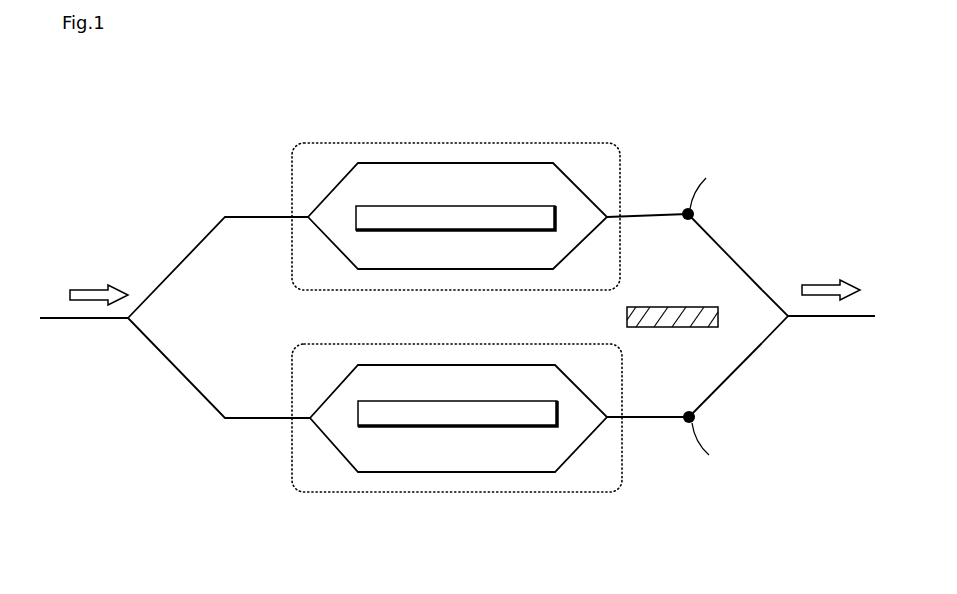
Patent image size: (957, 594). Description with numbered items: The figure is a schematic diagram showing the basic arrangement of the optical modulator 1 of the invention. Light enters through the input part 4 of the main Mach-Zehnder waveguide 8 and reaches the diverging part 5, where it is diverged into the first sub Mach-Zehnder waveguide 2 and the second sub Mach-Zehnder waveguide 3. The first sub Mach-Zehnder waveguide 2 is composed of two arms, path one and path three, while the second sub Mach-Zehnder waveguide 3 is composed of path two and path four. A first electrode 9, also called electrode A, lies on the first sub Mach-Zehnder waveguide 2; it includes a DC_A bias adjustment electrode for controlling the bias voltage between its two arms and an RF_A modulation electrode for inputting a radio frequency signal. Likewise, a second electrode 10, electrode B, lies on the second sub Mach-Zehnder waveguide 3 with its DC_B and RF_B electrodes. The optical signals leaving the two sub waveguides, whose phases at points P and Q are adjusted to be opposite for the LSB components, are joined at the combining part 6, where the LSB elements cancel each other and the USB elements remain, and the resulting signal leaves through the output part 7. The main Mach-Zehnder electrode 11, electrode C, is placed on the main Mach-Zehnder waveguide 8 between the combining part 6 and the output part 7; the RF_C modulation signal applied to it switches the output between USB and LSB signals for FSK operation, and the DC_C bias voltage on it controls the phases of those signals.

The optical modulator 1 is at (632, 114).
The first sub Mach-Zehnder waveguide 2 is at (445, 174).
The second sub Mach-Zehnder waveguide 3 is at (447, 465).
The input part 4 is at (72, 320).
The diverging part 5 is at (127, 322).
The combining part 6 is at (790, 319).
The output part 7 is at (867, 317).
The main Mach-Zehnder waveguide 8 is at (735, 262).
The first electrode 9 is at (520, 206).
The second electrode 10 is at (517, 427).
The main Mach-Zehnder electrode 11 is at (652, 306).